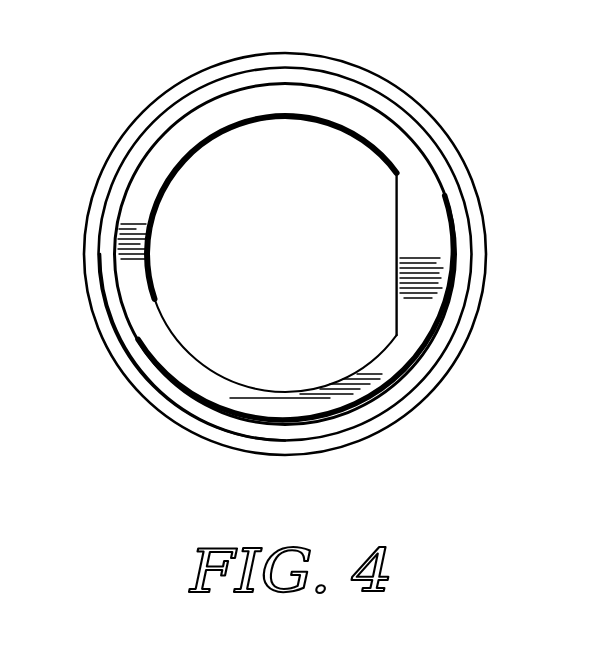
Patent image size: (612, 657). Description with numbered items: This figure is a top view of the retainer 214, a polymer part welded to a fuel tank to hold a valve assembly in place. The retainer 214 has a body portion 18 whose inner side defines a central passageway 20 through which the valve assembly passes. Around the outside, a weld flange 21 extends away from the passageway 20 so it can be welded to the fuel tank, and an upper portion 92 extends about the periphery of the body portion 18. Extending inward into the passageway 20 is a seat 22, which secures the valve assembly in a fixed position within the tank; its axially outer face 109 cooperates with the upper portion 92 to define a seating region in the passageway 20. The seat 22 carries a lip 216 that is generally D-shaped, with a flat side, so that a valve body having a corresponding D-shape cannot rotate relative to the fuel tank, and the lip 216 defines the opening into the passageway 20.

The body portion 18 is at (241, 434).
The central passageway 20 is at (331, 348).
The weld flange 21 is at (483, 300).
The seat 22 is at (407, 349).
The upper portion 92 is at (457, 244).
The axially outer face 109 is at (378, 120).
The retainer 214 is at (112, 373).
The lip 216 is at (187, 157).